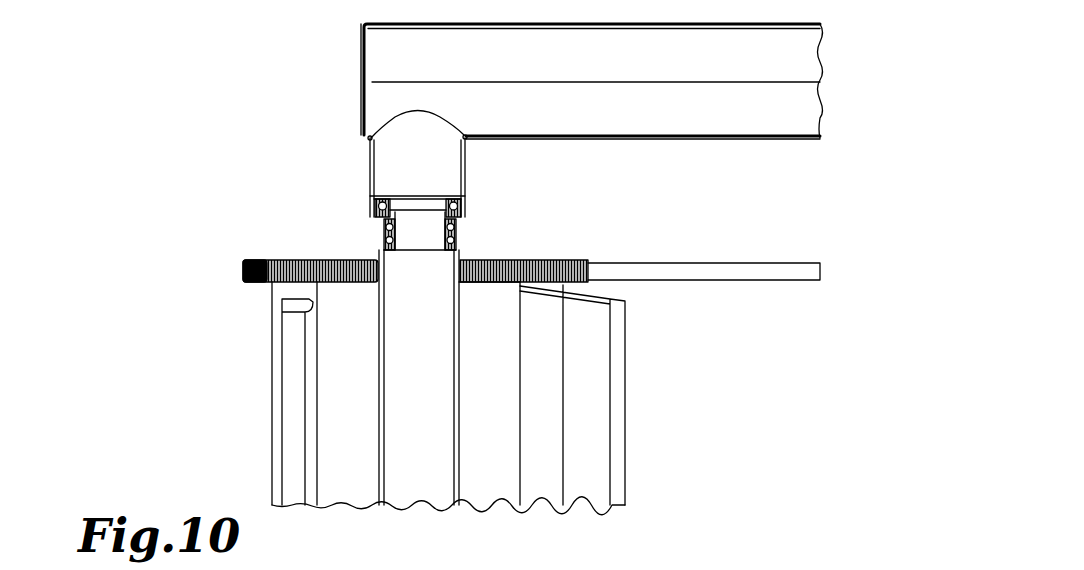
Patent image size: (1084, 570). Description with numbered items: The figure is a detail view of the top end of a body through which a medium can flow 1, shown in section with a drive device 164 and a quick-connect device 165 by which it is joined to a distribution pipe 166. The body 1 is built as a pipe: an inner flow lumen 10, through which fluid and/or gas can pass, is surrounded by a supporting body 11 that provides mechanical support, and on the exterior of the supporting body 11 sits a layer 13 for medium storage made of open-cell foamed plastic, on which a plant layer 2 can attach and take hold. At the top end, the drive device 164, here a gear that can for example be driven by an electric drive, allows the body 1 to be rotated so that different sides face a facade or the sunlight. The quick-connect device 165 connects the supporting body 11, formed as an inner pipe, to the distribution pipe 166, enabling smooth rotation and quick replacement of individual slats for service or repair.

The body through which a medium can flow 1 is at (128, 342).
The plant layer 2 is at (278, 443).
The inner flow lumen 10 is at (398, 398).
The supporting body 11 is at (385, 365).
The layer for medium storage 13 is at (332, 322).
The drive device 164 is at (243, 272).
The quick-connect device 165 is at (374, 227).
The distribution pipe 166 is at (378, 67).